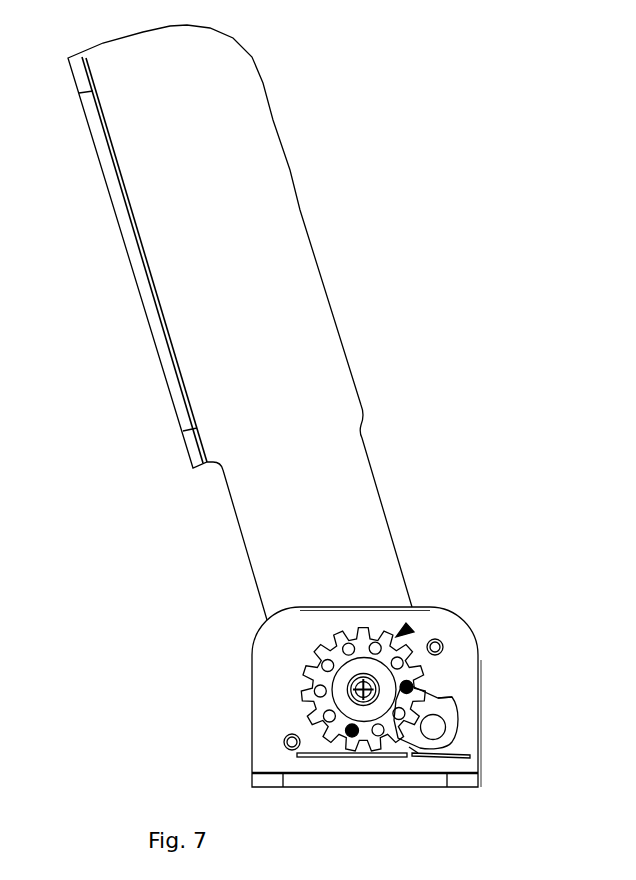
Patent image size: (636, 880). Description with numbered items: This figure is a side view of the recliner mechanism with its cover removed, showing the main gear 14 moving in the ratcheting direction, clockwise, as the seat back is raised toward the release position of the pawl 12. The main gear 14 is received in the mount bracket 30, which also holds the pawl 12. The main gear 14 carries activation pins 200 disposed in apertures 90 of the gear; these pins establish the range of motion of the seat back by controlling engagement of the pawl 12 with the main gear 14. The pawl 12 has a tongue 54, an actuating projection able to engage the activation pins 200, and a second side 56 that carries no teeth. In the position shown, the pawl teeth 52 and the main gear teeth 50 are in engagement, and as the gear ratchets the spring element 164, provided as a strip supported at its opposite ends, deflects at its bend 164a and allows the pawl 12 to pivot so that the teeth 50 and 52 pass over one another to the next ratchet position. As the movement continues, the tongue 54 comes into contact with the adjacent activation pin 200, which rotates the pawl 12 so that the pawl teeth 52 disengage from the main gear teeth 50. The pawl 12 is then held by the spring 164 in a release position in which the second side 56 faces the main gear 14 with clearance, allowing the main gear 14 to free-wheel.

The pawl 12 is at (460, 727).
The main gear 14 is at (410, 628).
The mount bracket 30 is at (251, 755).
The main gear teeth 50 is at (368, 628).
The pawl teeth 52 is at (383, 690).
The tongue 54 is at (397, 690).
The second side 56 is at (443, 694).
The apertures 90 is at (303, 687).
The spring element 164 is at (340, 757).
The bend 164a is at (412, 760).
The activation pins 200 is at (409, 685).